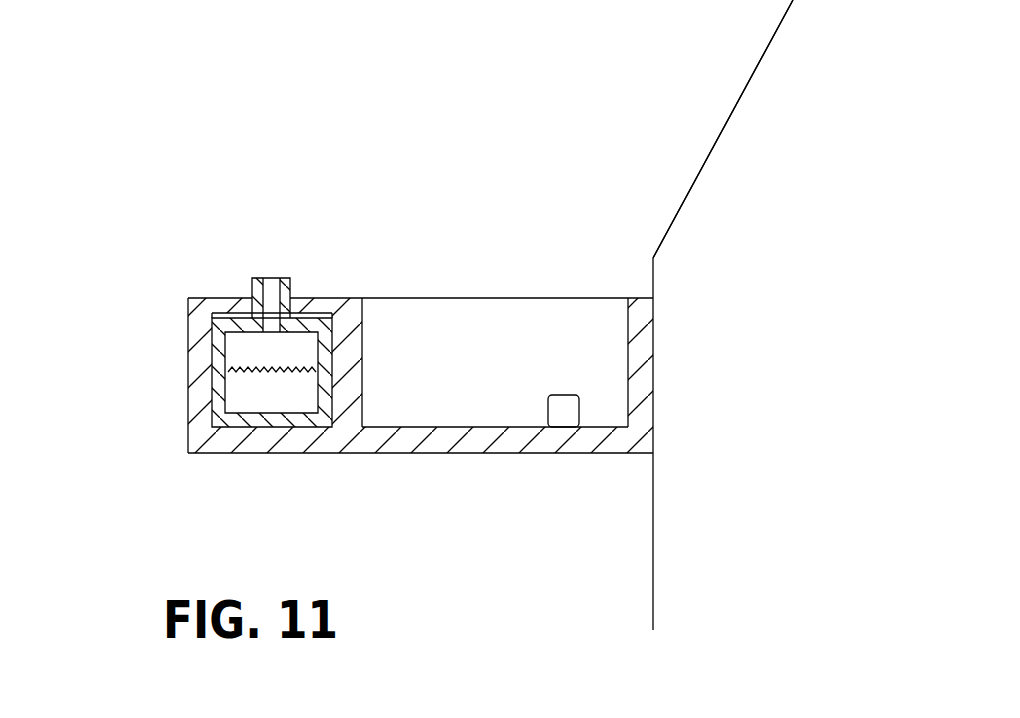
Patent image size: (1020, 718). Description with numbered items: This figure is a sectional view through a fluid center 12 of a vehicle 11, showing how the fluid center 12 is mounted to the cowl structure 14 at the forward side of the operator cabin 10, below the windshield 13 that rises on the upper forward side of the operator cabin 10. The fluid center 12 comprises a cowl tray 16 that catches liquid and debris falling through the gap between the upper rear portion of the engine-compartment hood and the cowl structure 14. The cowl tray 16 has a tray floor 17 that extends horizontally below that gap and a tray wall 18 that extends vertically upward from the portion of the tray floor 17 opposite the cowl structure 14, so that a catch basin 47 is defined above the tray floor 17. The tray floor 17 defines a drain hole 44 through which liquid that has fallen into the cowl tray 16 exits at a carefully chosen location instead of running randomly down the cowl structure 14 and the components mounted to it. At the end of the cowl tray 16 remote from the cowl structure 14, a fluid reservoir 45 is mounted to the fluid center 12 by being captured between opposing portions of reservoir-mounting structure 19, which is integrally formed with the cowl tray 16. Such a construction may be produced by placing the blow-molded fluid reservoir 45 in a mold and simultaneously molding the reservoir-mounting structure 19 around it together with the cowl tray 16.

The operator cabin 10 is at (763, 52).
The vehicle 11 is at (566, 112).
The fluid center 12 is at (334, 306).
The windshield 13 is at (721, 129).
The cowl structure 14 is at (653, 536).
The cowl tray 16 is at (487, 453).
The tray floor 17 is at (465, 427).
The tray wall 18 is at (360, 338).
The reservoir-mounting structure 19 is at (200, 378).
The drain hole 44 is at (568, 413).
The fluid reservoir 45 is at (222, 303).
The catch basin 47 is at (530, 330).